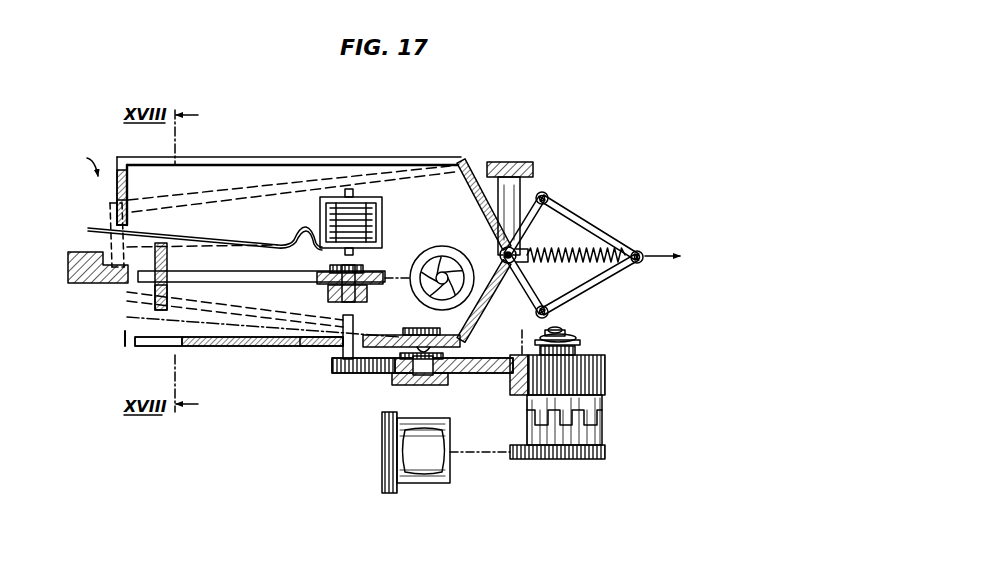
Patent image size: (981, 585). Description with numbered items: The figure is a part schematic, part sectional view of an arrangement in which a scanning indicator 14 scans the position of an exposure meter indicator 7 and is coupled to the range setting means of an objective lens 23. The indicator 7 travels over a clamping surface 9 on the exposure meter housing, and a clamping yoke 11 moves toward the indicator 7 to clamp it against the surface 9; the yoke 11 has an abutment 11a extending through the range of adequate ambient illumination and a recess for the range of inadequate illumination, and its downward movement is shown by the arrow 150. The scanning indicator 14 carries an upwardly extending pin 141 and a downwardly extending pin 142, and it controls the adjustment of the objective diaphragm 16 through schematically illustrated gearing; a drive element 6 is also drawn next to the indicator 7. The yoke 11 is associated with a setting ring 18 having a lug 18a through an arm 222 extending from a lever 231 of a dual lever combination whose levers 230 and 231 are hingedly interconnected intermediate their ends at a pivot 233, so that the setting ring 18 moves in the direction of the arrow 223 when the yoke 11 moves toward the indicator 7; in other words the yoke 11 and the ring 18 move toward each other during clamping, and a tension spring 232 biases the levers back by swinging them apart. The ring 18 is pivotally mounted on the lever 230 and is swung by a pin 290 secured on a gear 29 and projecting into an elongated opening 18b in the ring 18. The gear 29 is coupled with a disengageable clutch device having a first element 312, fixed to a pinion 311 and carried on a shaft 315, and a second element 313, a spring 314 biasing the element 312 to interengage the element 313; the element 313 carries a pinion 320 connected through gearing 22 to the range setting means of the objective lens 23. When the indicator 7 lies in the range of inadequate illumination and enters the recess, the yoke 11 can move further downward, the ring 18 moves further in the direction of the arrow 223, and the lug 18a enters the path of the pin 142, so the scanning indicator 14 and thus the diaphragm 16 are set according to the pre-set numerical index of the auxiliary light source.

The solenoid 6 is at (383, 213).
The exposure meter indicator 7 is at (248, 242).
The clamping surface 9 is at (80, 253).
The clamping yoke 11 is at (119, 172).
The abutment 11a is at (117, 198).
The scanning indicator 14 is at (270, 277).
The objective diaphragm 16 is at (438, 252).
The setting ring 18 is at (215, 347).
The lug 18a is at (156, 347).
The elongated opening 18b is at (333, 346).
The gearing 22 is at (472, 454).
The objective lens 23 is at (417, 483).
The gear 29 is at (350, 373).
The upwardly extending pin 141 is at (167, 262).
The downwardly extending pin 142 is at (160, 290).
The arrow 150 is at (80, 160).
The arm 222 is at (392, 161).
The arrow 223 is at (123, 340).
The lever 230 is at (482, 302).
The lever 231 is at (472, 185).
The tension spring 232 is at (574, 250).
The pivot 233 is at (500, 255).
The pin 290 is at (355, 325).
The pinion 311 is at (578, 372).
The clutch element 312 is at (525, 405).
The clutch element 313 is at (525, 432).
The spring 314 is at (582, 343).
The shaft 315 is at (552, 330).
The pinion 320 is at (540, 459).